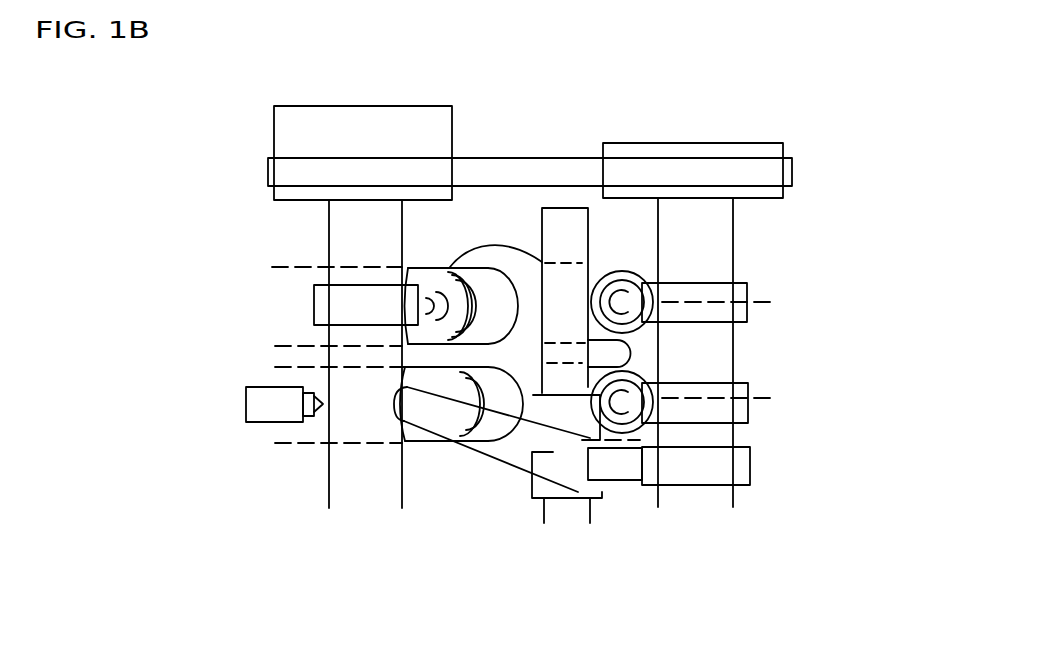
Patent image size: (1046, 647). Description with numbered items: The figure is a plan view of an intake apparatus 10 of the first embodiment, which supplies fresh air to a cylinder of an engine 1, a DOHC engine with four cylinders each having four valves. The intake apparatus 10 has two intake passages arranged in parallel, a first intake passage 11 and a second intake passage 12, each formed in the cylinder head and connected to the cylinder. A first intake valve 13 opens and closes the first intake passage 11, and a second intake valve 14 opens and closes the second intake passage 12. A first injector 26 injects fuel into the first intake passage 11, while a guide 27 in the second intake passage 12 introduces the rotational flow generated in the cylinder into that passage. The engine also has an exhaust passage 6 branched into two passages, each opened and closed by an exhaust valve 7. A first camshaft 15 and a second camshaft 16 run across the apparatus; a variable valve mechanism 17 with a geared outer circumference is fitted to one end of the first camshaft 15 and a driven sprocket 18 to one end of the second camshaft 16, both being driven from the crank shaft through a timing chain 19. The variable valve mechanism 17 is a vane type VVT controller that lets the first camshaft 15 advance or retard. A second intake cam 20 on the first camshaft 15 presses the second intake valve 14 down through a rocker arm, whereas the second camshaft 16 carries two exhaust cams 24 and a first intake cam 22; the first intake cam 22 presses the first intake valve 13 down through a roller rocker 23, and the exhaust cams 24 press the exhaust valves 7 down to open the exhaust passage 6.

The engine 1 is at (875, 573).
The intake apparatus 10 is at (208, 211).
The variable valve mechanism 17 is at (306, 118).
The driven sprocket 18 is at (720, 146).
The timing chain 19 is at (530, 172).
The first camshaft 15 is at (347, 468).
The second camshaft 16 is at (718, 496).
The second intake passage 12 is at (310, 271).
The first intake passage 11 is at (284, 437).
The second intake cam 20 is at (335, 302).
The first injector 26 is at (260, 408).
The second intake valve 14 is at (490, 262).
The guide 27 is at (437, 268).
The first intake valve 13 is at (478, 454).
The roller rocker 23 is at (522, 452).
The exhaust valve 7 is at (612, 268).
The exhaust passage 6 is at (768, 295).
The exhaust cam 24 is at (743, 281).
The first intake cam 22 is at (735, 464).